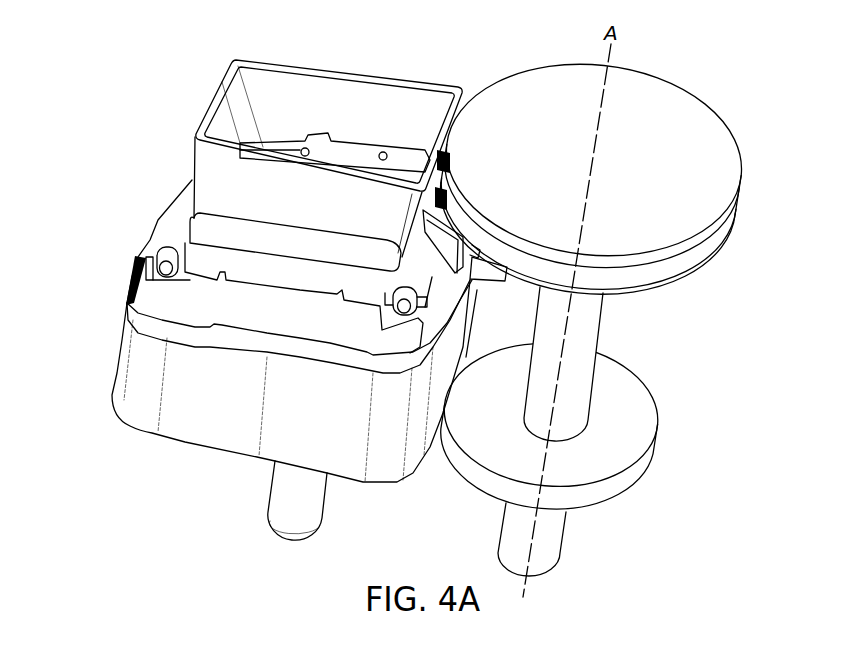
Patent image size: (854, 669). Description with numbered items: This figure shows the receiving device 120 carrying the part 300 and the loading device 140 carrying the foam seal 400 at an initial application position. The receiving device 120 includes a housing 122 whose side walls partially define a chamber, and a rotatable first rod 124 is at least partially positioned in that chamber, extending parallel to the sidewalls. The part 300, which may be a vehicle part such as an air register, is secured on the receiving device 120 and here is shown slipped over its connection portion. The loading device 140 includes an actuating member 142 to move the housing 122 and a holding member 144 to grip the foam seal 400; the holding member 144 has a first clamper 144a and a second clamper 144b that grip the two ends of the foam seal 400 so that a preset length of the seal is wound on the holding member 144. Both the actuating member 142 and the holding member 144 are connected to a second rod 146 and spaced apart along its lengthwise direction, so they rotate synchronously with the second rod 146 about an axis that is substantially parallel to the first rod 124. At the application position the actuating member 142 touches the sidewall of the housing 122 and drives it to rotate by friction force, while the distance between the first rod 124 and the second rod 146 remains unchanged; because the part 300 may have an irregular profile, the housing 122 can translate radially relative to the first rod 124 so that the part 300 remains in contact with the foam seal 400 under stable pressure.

The receiving device 120 is at (115, 258).
The housing 122 is at (175, 380).
The first rod 124 is at (322, 500).
The part 300 is at (207, 174).
The loading device 140 is at (692, 357).
The actuating member 142 is at (640, 415).
The holding member 144 is at (678, 138).
The first clamper 144a is at (447, 168).
The second clamper 144b is at (452, 205).
The second rod 146 is at (560, 537).
The foam seal 400 is at (660, 270).